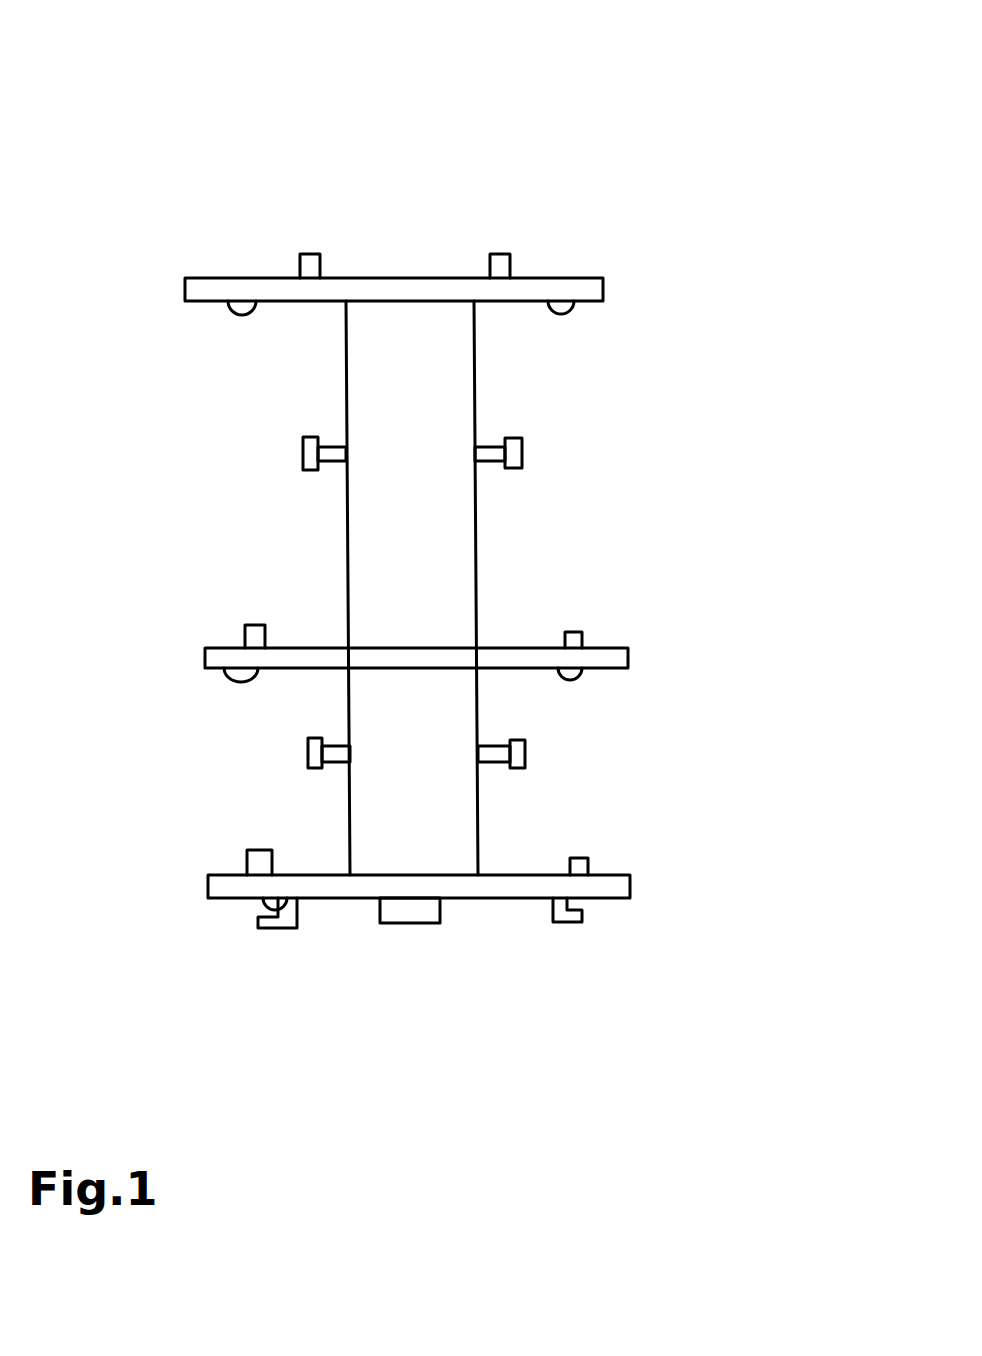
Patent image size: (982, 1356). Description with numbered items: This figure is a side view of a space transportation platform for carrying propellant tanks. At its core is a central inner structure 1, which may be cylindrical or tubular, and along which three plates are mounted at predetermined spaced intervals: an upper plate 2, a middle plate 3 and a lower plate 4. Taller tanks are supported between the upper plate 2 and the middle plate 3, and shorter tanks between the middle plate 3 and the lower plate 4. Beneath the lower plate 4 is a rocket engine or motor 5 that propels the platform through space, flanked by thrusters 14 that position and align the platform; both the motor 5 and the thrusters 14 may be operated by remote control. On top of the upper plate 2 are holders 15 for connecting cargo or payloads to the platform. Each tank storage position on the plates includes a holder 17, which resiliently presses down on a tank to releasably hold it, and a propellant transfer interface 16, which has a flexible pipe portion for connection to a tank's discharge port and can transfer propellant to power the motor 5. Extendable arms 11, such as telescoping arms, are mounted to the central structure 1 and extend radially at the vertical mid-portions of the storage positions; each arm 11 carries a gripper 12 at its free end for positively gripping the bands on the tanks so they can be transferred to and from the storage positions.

The central inner structure 1 is at (478, 577).
The upper plate 2 is at (603, 290).
The middle plate 3 is at (628, 660).
The lower plate 4 is at (630, 887).
The rocket engine or motor 5 is at (430, 925).
The extendable arm 11 is at (327, 438).
The gripper 12 is at (303, 449).
The thruster 14 is at (280, 930).
The holder 15 is at (304, 253).
The propellant transfer interface 16 is at (577, 631).
The holder 17 is at (565, 312).